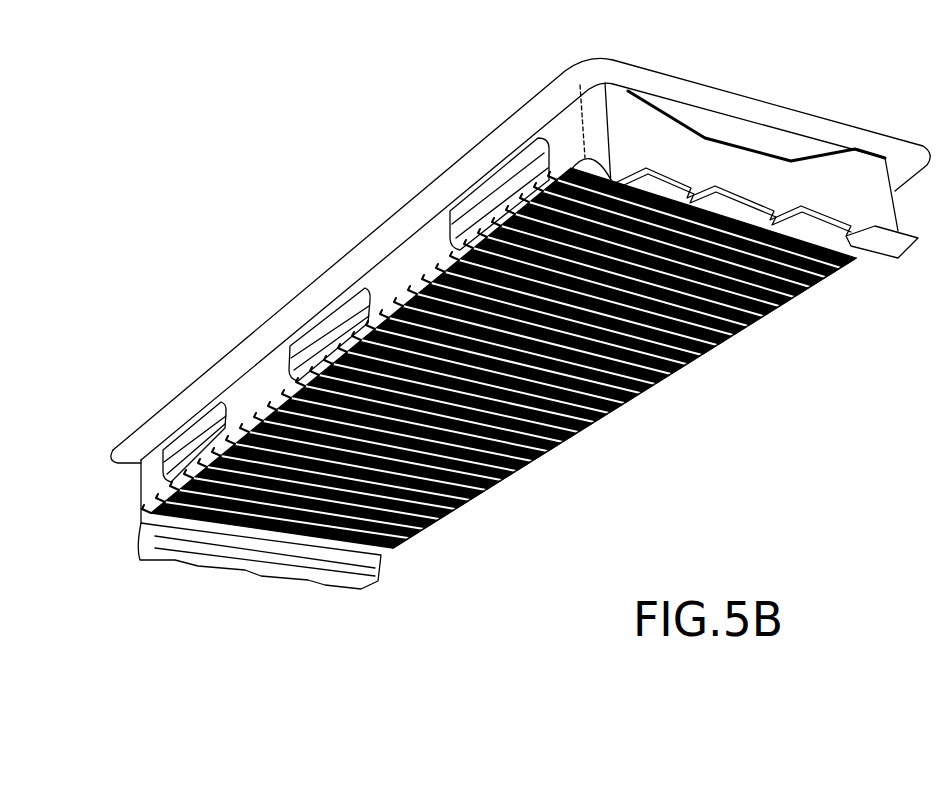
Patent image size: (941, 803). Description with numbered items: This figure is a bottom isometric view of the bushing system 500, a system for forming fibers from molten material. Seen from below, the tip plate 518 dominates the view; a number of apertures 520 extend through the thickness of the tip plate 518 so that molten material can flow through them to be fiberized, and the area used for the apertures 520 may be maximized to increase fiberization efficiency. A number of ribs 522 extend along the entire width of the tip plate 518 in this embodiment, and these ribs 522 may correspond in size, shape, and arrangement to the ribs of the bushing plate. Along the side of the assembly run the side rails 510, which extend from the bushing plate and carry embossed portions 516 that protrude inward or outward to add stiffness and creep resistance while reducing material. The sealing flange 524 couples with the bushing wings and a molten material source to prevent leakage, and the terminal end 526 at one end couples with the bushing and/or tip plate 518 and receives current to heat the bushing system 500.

The bushing system 500 is at (352, 615).
The side rails 510 is at (393, 266).
The embossed portions 516 is at (488, 182).
The tip plate 518 is at (437, 515).
The apertures 520 is at (800, 283).
The ribs 522 is at (673, 367).
The sealing flange 524 is at (223, 340).
The terminal end 526 is at (652, 122).